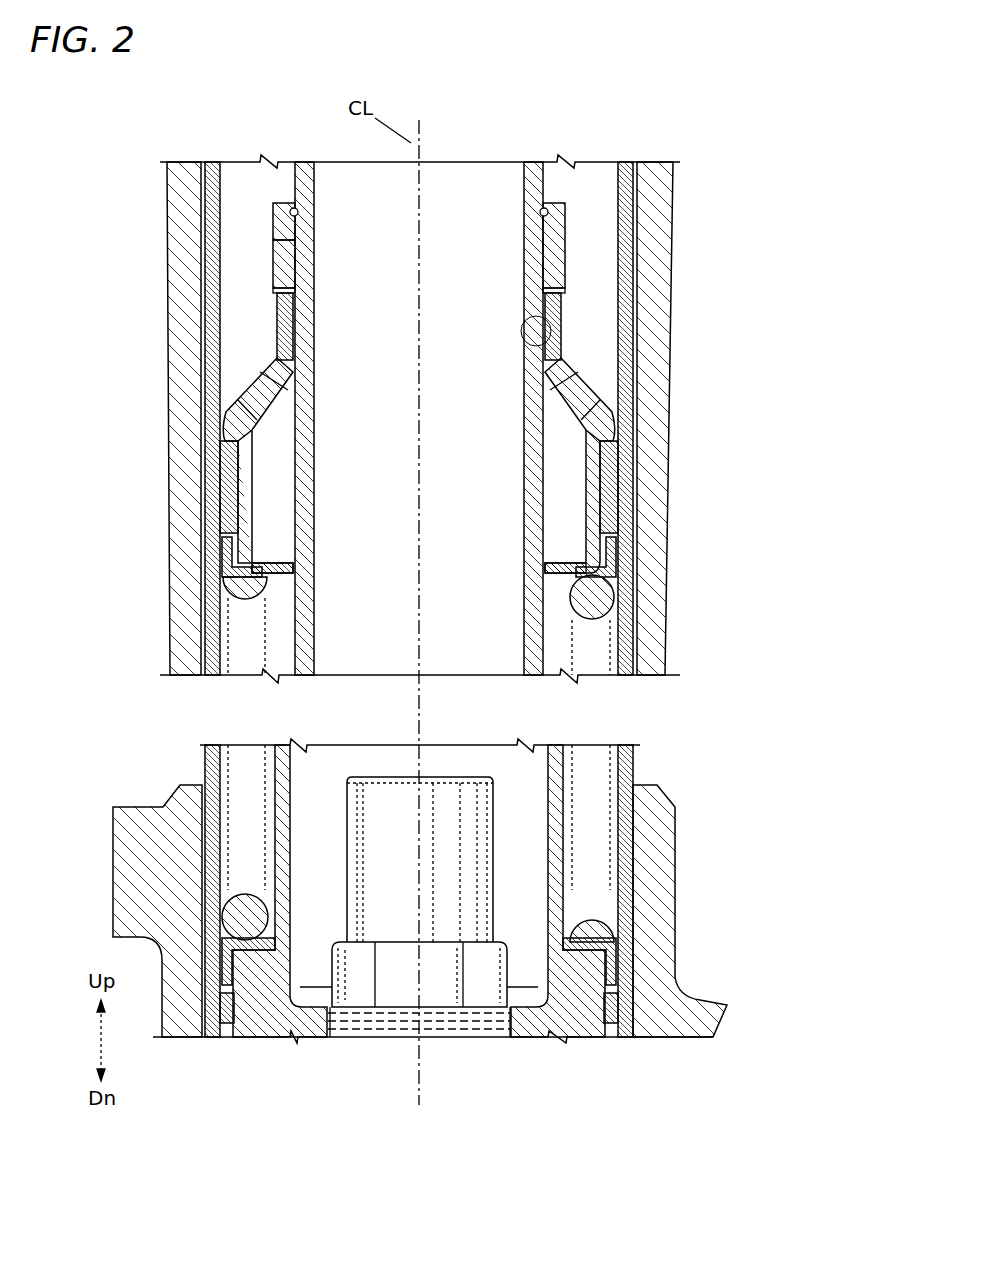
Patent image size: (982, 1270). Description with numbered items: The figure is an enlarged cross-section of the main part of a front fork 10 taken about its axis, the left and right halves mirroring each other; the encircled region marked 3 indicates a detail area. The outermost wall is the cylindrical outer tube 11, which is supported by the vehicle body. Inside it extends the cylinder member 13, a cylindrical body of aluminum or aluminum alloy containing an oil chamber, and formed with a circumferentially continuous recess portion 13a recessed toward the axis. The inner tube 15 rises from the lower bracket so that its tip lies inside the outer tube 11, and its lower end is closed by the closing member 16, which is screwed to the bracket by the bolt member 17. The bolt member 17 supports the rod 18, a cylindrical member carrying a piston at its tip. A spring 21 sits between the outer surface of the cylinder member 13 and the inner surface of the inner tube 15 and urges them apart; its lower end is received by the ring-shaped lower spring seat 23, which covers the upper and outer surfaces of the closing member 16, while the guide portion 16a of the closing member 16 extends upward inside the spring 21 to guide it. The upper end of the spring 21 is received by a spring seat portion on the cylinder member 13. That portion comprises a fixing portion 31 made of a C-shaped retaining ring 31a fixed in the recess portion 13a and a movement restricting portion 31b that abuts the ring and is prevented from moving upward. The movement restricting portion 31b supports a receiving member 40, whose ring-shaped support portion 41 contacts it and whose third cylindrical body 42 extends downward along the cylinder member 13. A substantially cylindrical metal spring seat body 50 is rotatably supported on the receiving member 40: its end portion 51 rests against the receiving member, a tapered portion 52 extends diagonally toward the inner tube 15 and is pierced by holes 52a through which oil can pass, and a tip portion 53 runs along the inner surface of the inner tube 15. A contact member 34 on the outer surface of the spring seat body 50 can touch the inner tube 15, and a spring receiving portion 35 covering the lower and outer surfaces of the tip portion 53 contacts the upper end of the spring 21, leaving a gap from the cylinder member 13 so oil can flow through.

The front fork 10 is at (702, 141).
The outer tube 11 is at (674, 195).
The cylinder member 13 is at (545, 180).
The recess portion 13a is at (556, 213).
The inner tube 15 is at (617, 183).
The closing member 16 is at (276, 1032).
The guide portion 16a is at (302, 746).
The bolt member 17 is at (389, 1025).
The rod 18 is at (397, 770).
The spring 21 is at (228, 634).
The lower spring seat 23 is at (618, 964).
The fixing portion 31 is at (108, 172).
The retaining ring 31a is at (293, 199).
The movement restricting portion 31b is at (272, 236).
The contact member 34 is at (225, 486).
The spring receiving portion 35 is at (226, 551).
The receiving member 40 is at (108, 300).
The support portion 41 is at (276, 292).
The third cylindrical body 42 is at (281, 328).
The spring seat body 50 is at (716, 290).
The end portion 51 is at (562, 322).
The tapered portion 52 is at (577, 370).
The holes 52a is at (259, 397).
The tip portion 53 is at (619, 435).
The detail region of FIG. 3 is at (533, 321).